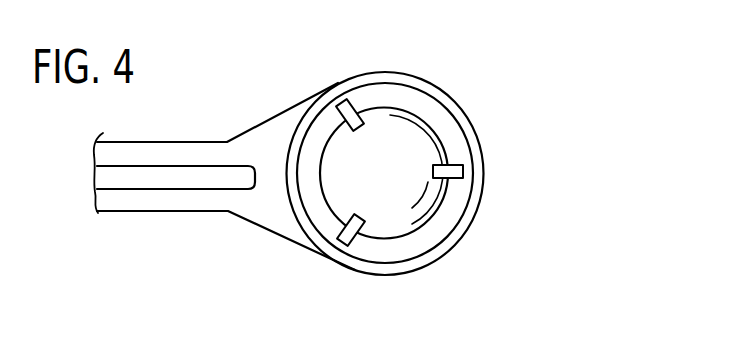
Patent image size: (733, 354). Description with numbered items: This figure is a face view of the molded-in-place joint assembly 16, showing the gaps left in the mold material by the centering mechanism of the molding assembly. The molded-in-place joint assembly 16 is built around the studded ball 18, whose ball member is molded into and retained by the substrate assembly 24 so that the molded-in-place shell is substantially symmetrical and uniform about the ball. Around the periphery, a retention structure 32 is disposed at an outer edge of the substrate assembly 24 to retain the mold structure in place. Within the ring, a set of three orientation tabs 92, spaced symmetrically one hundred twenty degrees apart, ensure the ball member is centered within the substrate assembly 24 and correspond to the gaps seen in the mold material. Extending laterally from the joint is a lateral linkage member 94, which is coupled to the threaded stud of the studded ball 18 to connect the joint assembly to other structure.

The molded-in-place joint assembly 16 is at (383, 174).
The studded ball 18 is at (383, 174).
The substrate assembly 24 is at (435, 260).
The retention structure 32 is at (443, 223).
The orientation tabs 92 is at (345, 104).
The lateral linkage member 94 is at (143, 212).